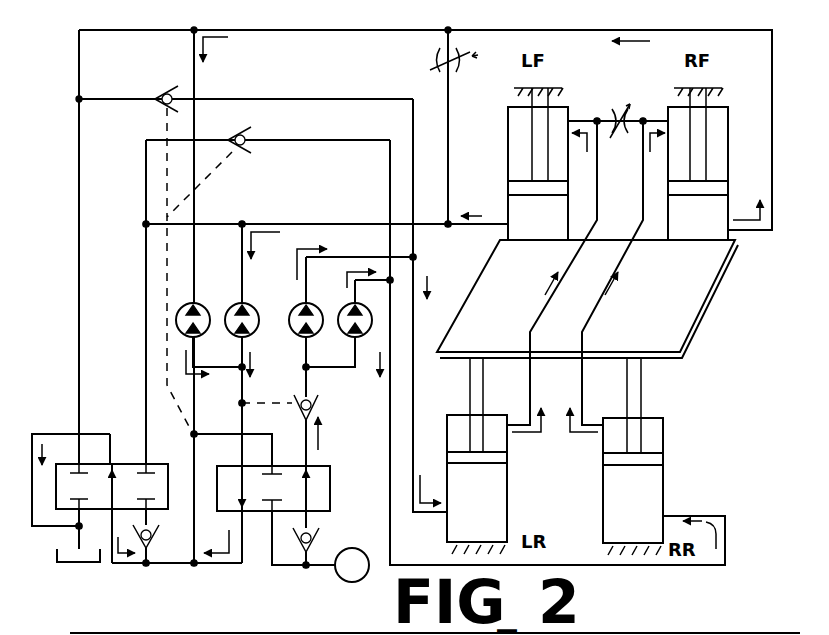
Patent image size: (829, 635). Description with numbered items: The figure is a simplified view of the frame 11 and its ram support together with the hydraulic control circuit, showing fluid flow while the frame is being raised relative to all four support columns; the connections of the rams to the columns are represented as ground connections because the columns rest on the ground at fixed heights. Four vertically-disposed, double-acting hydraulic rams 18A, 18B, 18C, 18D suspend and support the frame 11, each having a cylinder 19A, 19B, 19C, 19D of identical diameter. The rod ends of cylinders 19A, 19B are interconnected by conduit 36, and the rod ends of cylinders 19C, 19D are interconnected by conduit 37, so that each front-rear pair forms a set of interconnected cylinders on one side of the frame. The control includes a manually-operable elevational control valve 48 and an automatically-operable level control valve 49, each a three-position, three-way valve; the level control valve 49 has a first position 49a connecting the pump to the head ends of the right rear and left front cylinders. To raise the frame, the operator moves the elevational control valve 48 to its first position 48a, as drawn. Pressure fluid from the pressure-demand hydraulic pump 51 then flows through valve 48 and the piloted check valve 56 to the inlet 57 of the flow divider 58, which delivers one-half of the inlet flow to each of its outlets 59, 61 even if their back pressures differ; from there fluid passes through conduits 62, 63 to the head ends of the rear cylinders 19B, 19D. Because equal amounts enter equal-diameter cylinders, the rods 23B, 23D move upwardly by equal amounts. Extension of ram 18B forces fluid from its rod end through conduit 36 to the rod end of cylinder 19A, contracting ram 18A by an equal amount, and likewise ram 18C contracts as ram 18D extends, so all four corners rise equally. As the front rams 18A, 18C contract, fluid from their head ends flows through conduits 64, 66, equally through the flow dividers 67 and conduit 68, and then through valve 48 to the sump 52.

The frame 11 is at (706, 318).
The right front hydraulic ram 18A is at (720, 163).
The right rear hydraulic ram 18B is at (675, 486).
The left front hydraulic ram 18C is at (510, 164).
The left rear hydraulic ram 18D is at (511, 484).
The right front cylinder 19A is at (728, 150).
The right rear cylinder 19B is at (663, 488).
The left front cylinder 19C is at (508, 164).
The left rear cylinder 19D is at (507, 500).
The rod of right rear ram 23B is at (641, 386).
The rod of left rear ram 23D is at (488, 407).
The conduit 36 is at (626, 259).
The conduit 37 is at (567, 259).
The elevational control valve 48 is at (285, 499).
The first position of elevational control valve 48a is at (322, 487).
The level control valve 49 is at (137, 481).
The first position of level control valve 49a is at (100, 452).
The hydraulic pump 51 is at (353, 548).
The sump 52 is at (90, 566).
The piloted check valve 56 is at (301, 410).
The inlet of flow divider 57 is at (329, 353).
The flow divider 58 is at (337, 293).
The outlet of flow divider 59 is at (361, 310).
The outlet of flow divider 61 is at (304, 302).
The conduit 62 is at (390, 408).
The conduit 63 is at (415, 409).
The conduit 64 is at (309, 31).
The conduit 66 is at (332, 223).
The flow dividers 67 is at (230, 295).
The conduit 68 is at (236, 393).